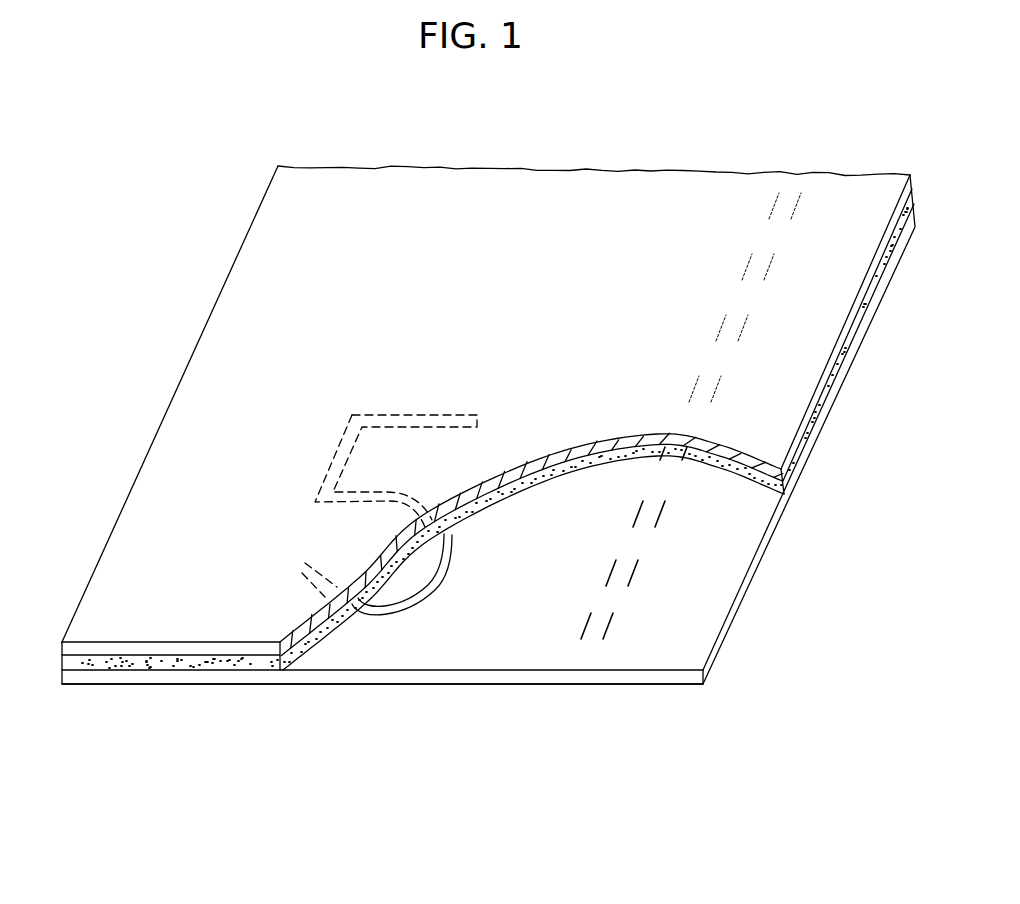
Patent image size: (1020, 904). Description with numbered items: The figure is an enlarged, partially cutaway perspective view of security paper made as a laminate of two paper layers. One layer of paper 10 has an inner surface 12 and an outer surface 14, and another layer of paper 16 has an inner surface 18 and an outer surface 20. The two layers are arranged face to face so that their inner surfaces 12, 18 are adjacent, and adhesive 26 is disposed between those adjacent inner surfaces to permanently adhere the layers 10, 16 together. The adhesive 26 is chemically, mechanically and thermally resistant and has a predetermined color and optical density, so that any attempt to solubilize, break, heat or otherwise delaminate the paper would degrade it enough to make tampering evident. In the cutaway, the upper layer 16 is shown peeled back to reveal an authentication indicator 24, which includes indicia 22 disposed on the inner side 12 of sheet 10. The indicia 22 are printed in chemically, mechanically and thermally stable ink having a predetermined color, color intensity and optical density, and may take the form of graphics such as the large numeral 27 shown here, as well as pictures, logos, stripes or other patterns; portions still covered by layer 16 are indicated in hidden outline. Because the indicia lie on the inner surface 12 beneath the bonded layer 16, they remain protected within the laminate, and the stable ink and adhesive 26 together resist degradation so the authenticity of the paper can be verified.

The layer of paper 10 is at (728, 630).
The inner surface 12 is at (727, 576).
The outer surface 14 is at (652, 686).
The layer of paper 16 is at (728, 167).
The inner surface 18 is at (603, 452).
The outer surface 20 is at (513, 182).
The indicia 22 is at (630, 573).
The authentication indicator 24 is at (590, 652).
The adhesive 26 is at (806, 445).
The large numeral 27 is at (418, 593).